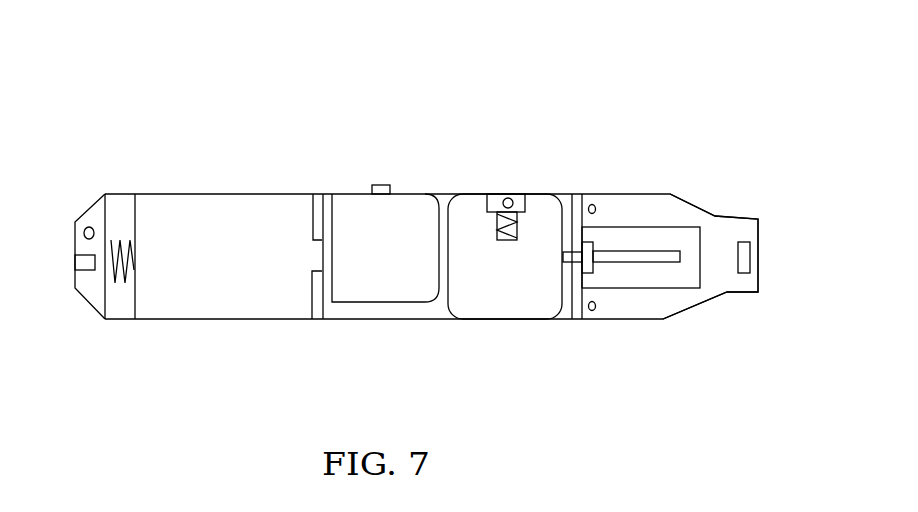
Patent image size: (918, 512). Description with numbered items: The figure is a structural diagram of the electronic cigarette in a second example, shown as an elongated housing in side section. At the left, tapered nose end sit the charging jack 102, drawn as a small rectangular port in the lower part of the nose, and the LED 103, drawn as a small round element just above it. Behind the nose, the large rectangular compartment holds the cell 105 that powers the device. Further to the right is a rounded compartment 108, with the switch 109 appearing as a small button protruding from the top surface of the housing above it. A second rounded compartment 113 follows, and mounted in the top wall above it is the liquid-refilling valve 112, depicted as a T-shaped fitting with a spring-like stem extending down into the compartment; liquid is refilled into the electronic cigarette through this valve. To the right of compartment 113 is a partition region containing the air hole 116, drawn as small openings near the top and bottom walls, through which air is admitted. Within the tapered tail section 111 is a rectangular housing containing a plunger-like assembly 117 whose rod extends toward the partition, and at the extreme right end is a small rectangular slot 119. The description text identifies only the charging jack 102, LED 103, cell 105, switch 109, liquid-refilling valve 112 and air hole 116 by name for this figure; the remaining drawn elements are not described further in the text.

The charging jack 102 is at (82, 262).
The LED 103 is at (84, 222).
The cell 105 is at (193, 300).
The battery compartment 108 is at (352, 225).
The switch 109 is at (383, 176).
The tail housing 111 is at (640, 290).
The liquid-refilling valve 112 is at (510, 196).
The electronics compartment 113 is at (515, 302).
The air hole 116 is at (600, 211).
The plunger assembly 117 is at (680, 243).
The end cap slot 119 is at (750, 265).